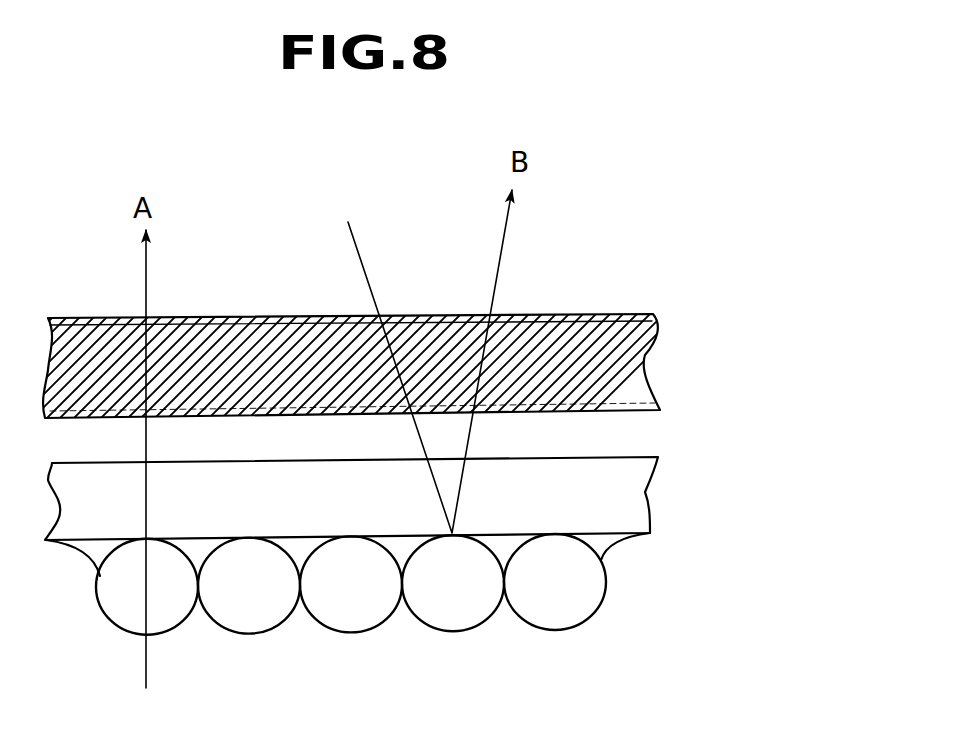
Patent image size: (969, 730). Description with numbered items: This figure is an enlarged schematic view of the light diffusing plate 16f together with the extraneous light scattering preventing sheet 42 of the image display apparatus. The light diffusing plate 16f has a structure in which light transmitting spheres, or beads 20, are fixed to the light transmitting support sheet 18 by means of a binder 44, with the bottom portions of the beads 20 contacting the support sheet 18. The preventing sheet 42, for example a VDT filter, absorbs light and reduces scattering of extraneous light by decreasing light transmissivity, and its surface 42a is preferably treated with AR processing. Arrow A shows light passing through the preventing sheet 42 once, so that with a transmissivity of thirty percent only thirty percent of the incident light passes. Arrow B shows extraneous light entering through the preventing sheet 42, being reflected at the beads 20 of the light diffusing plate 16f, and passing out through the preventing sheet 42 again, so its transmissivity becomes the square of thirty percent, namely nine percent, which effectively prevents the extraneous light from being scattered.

The extraneous light scattering preventing sheet 42 is at (640, 356).
The surface of the preventing sheet 42a is at (610, 314).
The light transmitting support sheet 18 is at (628, 488).
The light transmitting spheres (beads) 20 is at (555, 622).
The binder 44 is at (612, 546).
The light diffusing plate 16f is at (735, 546).